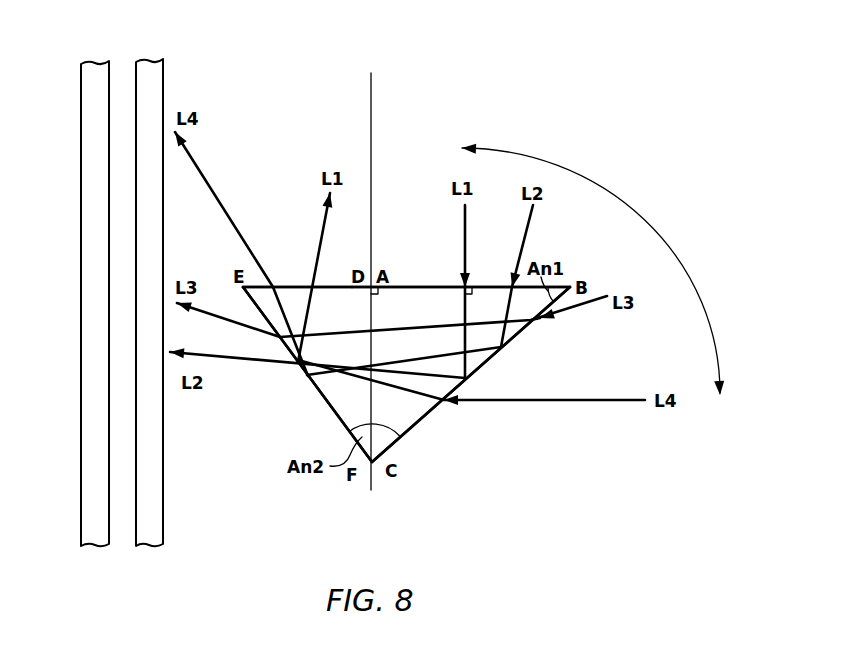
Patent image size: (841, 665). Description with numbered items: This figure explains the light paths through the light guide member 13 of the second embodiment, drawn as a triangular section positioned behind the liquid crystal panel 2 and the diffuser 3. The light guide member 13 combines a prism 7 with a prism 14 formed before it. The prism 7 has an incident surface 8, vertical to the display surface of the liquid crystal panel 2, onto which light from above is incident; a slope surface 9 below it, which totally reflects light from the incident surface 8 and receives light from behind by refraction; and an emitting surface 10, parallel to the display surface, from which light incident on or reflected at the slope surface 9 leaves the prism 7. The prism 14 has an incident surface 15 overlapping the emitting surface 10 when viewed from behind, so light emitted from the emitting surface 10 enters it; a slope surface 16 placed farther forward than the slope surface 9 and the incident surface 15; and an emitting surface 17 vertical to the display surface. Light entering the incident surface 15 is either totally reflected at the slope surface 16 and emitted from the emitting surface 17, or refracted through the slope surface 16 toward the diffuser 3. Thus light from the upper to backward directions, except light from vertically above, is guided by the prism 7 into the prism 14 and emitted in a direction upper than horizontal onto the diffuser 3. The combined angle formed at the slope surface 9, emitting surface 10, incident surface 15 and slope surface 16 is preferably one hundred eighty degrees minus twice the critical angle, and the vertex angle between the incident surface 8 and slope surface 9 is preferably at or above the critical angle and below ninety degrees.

The liquid crystal panel 2 is at (88, 62).
The diffuser 3 is at (147, 60).
The prism 7 is at (393, 297).
The incident surface 8 is at (422, 286).
The slope surface 9 is at (432, 407).
The emitting surface 10 is at (372, 393).
The light guide member 13 is at (407, 163).
The prism 14 is at (335, 286).
The incident surface 15 is at (330, 411).
The slope surface 16 is at (310, 386).
The emitting surface 17 is at (294, 286).